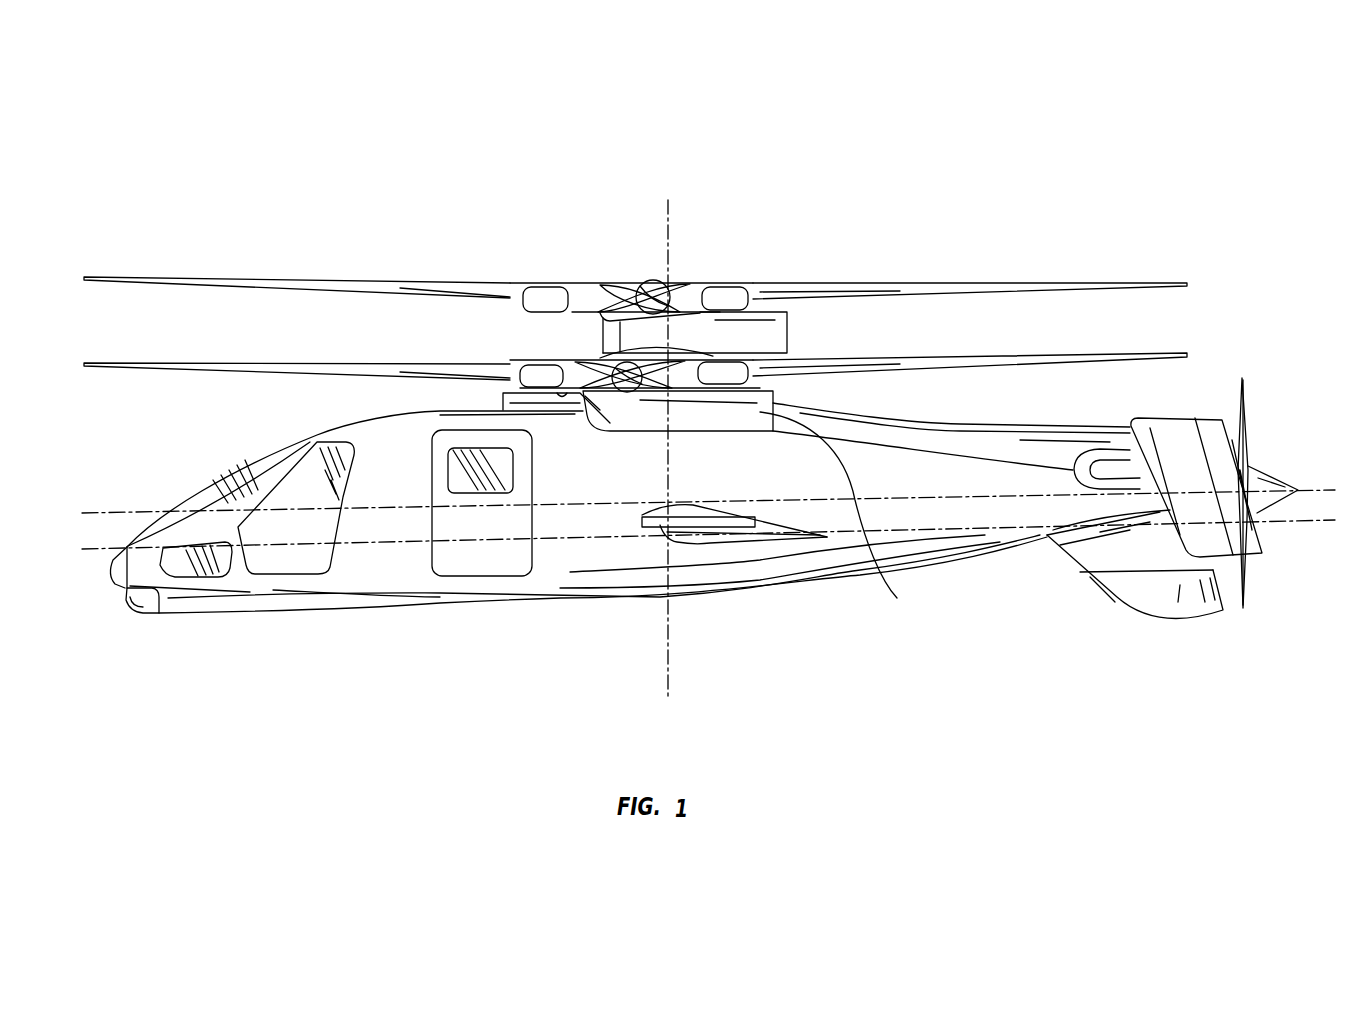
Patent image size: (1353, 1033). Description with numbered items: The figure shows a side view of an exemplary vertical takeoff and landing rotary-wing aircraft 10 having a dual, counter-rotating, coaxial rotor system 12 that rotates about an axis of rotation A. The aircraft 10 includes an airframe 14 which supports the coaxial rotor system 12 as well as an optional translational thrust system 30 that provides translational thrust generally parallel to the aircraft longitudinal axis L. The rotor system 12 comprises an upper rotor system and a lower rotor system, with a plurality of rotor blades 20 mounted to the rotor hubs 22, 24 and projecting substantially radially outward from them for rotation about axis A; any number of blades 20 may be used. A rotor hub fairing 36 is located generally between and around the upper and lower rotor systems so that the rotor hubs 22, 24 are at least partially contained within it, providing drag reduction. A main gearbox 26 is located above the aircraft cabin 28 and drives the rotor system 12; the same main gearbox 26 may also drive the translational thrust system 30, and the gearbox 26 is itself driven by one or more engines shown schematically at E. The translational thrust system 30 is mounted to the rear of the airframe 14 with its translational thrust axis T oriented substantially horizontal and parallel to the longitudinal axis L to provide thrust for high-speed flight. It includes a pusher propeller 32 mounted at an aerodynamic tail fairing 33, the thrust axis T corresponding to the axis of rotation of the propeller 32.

The rotary-wing aircraft 10 is at (847, 167).
The coaxial rotor system 12 is at (741, 252).
The airframe 14 is at (310, 433).
The rotor blades 20 is at (1007, 357).
The upper rotor hub 22 is at (608, 270).
The lower rotor hub 24 is at (600, 358).
The main gearbox 26 is at (638, 413).
The aircraft cabin 28 is at (393, 580).
The translational thrust system 30 is at (1243, 372).
The pusher propeller 32 is at (1250, 570).
The aerodynamic tail fairing 33 is at (1127, 597).
The rotor hub fairing 36 is at (787, 326).